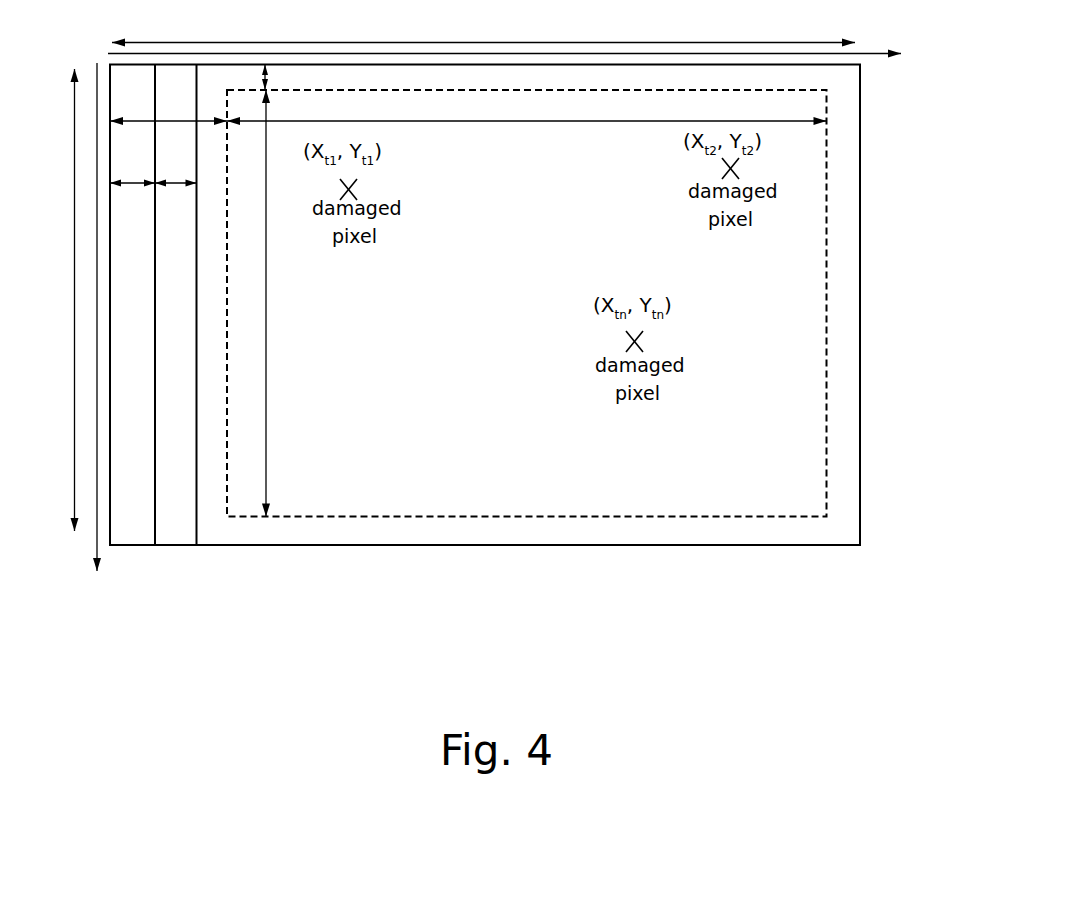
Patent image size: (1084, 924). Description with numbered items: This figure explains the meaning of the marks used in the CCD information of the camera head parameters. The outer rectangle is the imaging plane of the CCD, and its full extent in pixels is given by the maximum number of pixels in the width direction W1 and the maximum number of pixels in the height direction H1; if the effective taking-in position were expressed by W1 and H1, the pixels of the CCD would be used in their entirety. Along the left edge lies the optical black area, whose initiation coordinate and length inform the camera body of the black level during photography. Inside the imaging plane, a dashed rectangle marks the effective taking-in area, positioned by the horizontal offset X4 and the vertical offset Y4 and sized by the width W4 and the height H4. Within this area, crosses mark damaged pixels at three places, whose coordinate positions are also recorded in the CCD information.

The maximum number of pixels in the width direction W1 is at (497, 290).
The maximum number of pixels in the height direction H1 is at (63, 300).
The horizontal initiation coordinate of the effective taking-in position X4 is at (168, 108).
The vertical initiation coordinate of the effective taking-in position Y4 is at (277, 77).
The number of pixels in the width direction of the effective taking-in area W4 is at (527, 109).
The number of pixels in the height direction of the effective taking-in area H4 is at (254, 303).